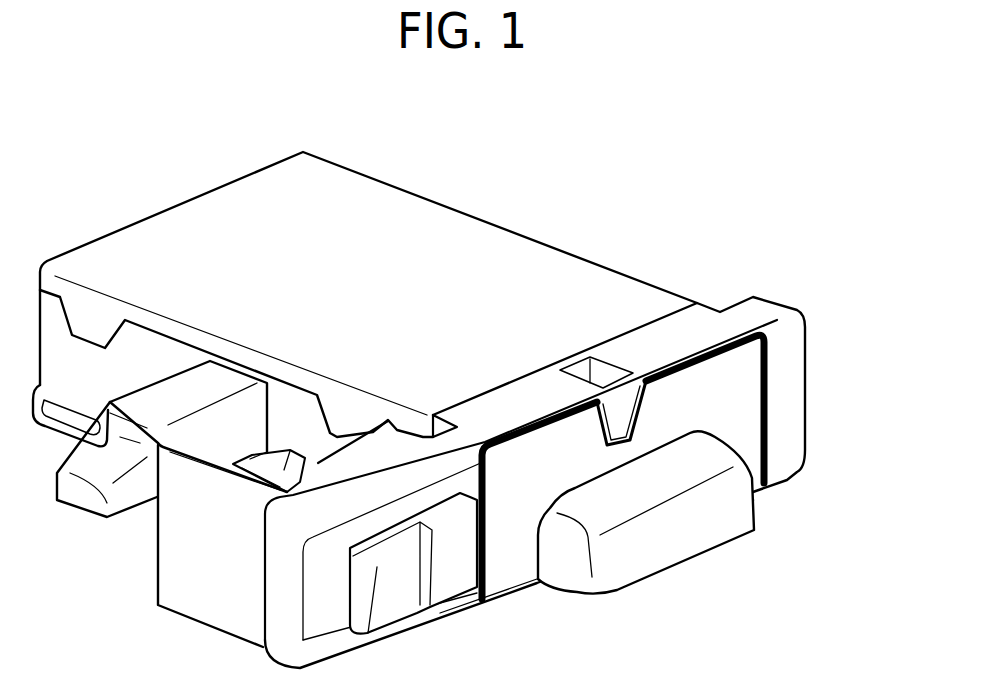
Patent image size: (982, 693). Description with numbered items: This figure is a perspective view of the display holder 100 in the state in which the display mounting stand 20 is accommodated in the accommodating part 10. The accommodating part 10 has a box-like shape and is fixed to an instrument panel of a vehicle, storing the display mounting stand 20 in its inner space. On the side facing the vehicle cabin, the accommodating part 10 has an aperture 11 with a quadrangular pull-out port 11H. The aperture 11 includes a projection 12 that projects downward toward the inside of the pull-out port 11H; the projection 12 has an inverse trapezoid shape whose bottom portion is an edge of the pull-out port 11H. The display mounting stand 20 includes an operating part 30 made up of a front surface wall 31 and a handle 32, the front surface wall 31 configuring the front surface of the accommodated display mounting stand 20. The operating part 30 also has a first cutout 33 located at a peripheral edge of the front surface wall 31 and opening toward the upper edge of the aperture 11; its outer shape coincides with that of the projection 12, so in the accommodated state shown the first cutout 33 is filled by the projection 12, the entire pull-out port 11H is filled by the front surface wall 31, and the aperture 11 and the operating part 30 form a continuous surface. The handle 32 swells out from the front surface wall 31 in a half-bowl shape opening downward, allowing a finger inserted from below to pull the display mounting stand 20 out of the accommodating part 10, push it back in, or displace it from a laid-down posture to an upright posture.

The display holder 100 is at (668, 210).
The accommodating part 10 is at (540, 243).
The aperture 11 is at (806, 383).
The pull-out port 11H is at (753, 445).
The projection 12 is at (620, 398).
The display mounting stand 20 is at (682, 597).
The operating part 30 is at (537, 612).
The front surface wall 31 is at (517, 460).
The handle 32 is at (580, 593).
The first cutout 33 is at (633, 432).